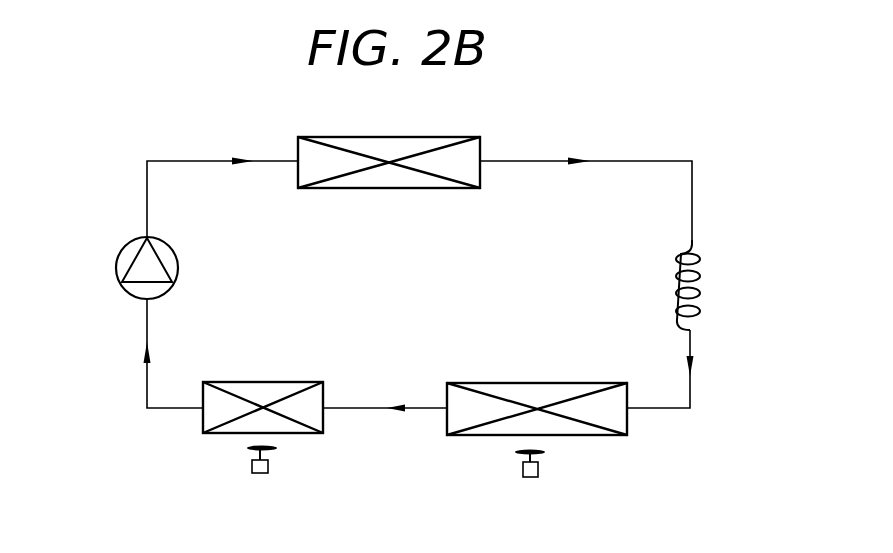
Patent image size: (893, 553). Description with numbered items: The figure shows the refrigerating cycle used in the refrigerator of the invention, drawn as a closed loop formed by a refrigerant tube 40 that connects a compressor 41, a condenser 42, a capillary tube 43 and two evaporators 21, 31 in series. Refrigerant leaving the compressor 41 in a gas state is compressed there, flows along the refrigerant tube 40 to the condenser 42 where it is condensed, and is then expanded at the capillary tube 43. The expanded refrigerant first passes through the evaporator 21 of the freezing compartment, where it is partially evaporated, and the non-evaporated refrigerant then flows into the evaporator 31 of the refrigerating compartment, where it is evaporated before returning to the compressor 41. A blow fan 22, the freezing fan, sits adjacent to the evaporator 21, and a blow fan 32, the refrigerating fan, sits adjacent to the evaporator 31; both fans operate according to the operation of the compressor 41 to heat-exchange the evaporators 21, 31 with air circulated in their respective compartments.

The refrigerant tube 40 is at (182, 159).
The compressor 41 is at (115, 267).
The condenser 42 is at (432, 137).
The capillary tube 43 is at (700, 254).
The evaporator 31 is at (203, 418).
The blow fan 32 is at (262, 473).
The evaporator 21 is at (478, 436).
The blow fan 22 is at (538, 468).